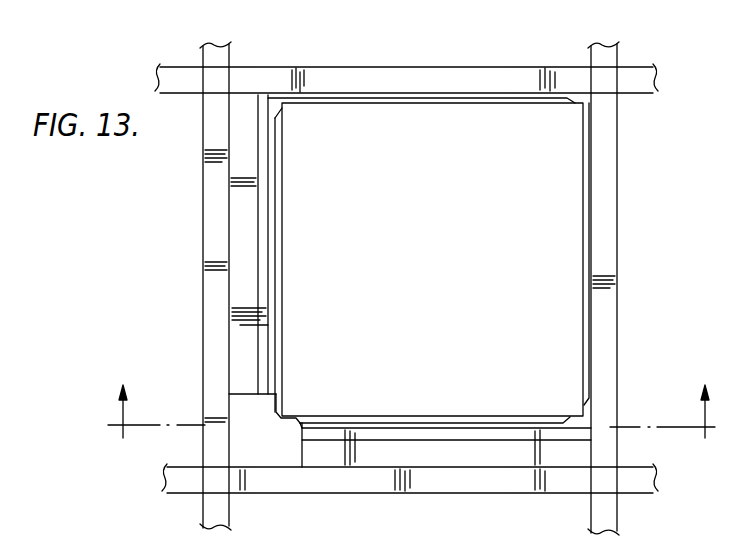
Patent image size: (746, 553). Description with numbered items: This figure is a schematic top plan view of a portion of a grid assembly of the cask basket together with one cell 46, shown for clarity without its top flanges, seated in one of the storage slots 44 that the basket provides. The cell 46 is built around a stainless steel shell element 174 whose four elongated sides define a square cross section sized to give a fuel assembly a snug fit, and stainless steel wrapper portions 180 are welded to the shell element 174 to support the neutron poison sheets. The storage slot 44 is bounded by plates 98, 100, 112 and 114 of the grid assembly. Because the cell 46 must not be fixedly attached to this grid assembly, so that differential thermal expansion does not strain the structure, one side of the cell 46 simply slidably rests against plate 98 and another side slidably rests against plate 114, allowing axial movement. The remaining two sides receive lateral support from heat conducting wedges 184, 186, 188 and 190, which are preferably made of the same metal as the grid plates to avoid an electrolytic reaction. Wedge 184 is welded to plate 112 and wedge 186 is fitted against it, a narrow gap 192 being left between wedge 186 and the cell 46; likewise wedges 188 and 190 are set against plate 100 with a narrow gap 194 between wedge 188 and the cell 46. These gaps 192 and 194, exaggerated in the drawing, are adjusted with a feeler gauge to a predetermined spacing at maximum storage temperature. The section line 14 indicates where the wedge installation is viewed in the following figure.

The section line 14 is at (417, 411).
The storage slot 44 is at (252, 457).
The cell 46 is at (642, 247).
The plate 98 is at (656, 82).
The plate 100 is at (655, 487).
The plate 112 is at (203, 506).
The plate 114 is at (617, 518).
The shell element 174 is at (285, 405).
The wrapper portion 180 is at (296, 102).
The wedge 184 is at (237, 157).
The wedge 186 is at (262, 345).
The wedge 188 is at (410, 433).
The wedge 190 is at (483, 458).
The gap 192 is at (271, 397).
The gap 194 is at (300, 427).